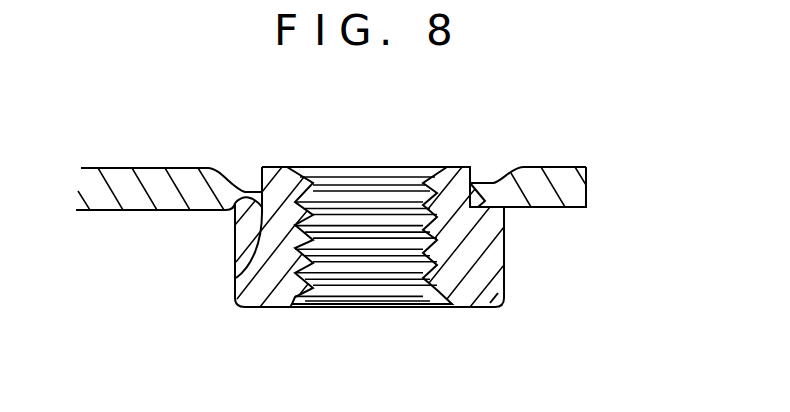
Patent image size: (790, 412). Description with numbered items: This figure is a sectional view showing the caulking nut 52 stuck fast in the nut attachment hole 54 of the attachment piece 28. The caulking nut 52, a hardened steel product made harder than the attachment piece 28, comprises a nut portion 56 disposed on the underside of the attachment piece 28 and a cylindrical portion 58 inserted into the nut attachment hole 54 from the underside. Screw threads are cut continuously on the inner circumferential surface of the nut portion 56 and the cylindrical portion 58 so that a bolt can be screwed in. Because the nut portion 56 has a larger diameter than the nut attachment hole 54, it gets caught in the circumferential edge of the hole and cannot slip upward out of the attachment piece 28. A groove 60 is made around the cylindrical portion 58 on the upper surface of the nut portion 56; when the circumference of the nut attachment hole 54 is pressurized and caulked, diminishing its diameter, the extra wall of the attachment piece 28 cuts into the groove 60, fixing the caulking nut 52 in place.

The attachment piece 28 is at (557, 170).
The caulking nut 52 is at (486, 326).
The nut attachment hole 54 is at (480, 182).
The nut portion 56 is at (492, 255).
The cylindrical portion 58 is at (452, 170).
The groove 60 is at (237, 270).